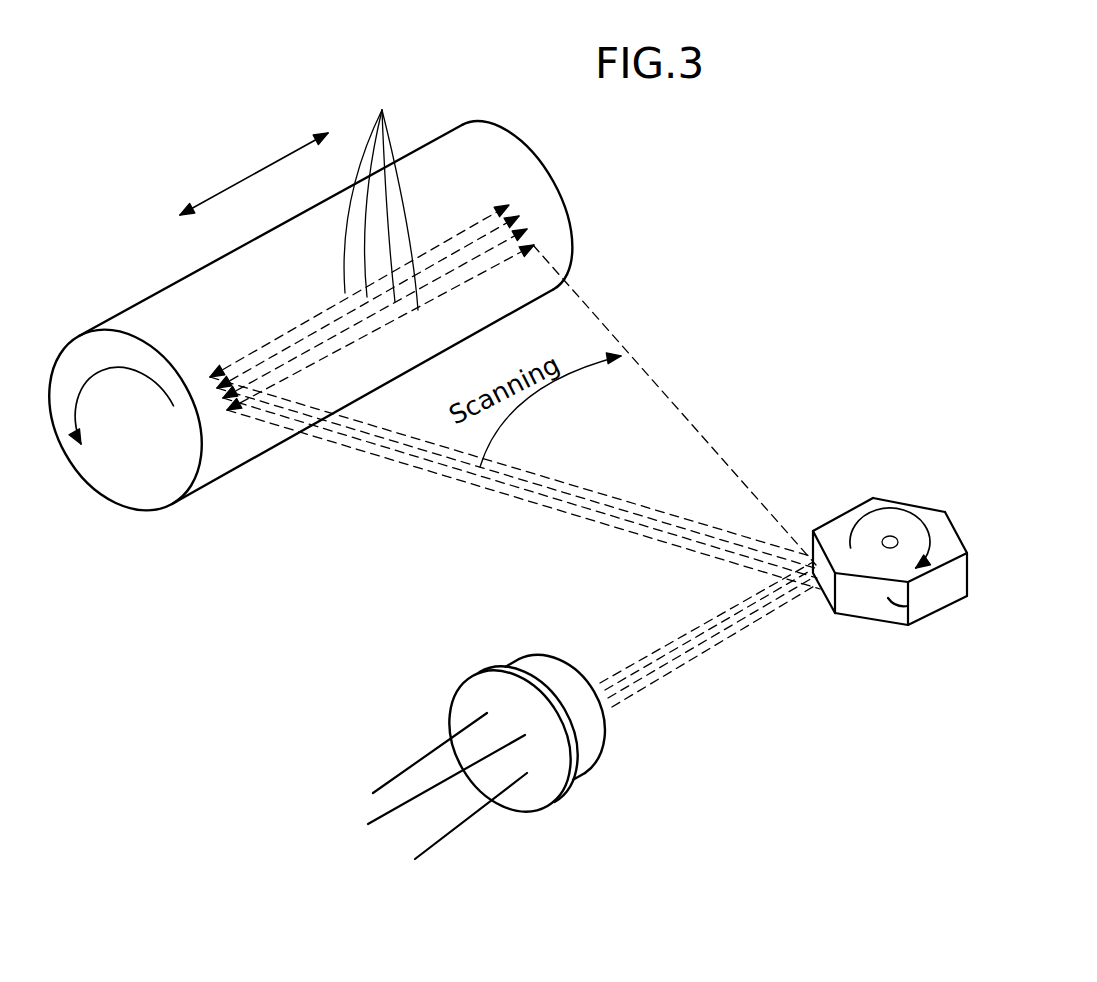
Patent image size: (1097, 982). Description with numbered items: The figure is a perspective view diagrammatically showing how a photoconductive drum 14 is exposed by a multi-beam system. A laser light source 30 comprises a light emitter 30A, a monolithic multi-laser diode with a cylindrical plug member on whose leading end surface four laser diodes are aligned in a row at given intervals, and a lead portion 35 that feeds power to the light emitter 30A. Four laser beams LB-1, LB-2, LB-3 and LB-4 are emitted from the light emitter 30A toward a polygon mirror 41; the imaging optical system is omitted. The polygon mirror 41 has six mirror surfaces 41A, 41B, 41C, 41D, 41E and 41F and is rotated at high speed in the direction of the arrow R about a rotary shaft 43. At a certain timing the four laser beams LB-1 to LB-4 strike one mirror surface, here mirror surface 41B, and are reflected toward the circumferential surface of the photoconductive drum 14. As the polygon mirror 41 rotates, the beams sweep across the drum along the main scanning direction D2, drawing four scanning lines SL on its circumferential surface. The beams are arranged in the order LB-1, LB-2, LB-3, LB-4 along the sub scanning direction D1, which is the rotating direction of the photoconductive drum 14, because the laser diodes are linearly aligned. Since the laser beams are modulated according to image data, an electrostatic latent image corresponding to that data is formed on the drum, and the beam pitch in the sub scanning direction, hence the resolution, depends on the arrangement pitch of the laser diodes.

The photoconductive drum 14 is at (100, 470).
The sub scanning direction D1 is at (92, 362).
The main scanning direction D2 is at (253, 177).
The scanning lines SL is at (381, 196).
The laser light source 30 is at (452, 717).
The light emitter 30A is at (593, 768).
The lead portion 35 is at (440, 739).
The laser beam LB-1 is at (615, 672).
The laser beam LB-2 is at (685, 638).
The laser beam LB-3 is at (707, 645).
The laser beam LB-4 is at (650, 690).
The polygon mirror 41 is at (907, 547).
The mirror surface 41A is at (935, 608).
The mirror surface 41B is at (823, 597).
The mirror surface 41C is at (838, 513).
The mirror surface 41D is at (913, 503).
The mirror surface 41E is at (957, 523).
The mirror surface 41F is at (953, 582).
The rotary shaft 43 is at (889, 536).
The rotation direction of polygon mirror R is at (920, 520).